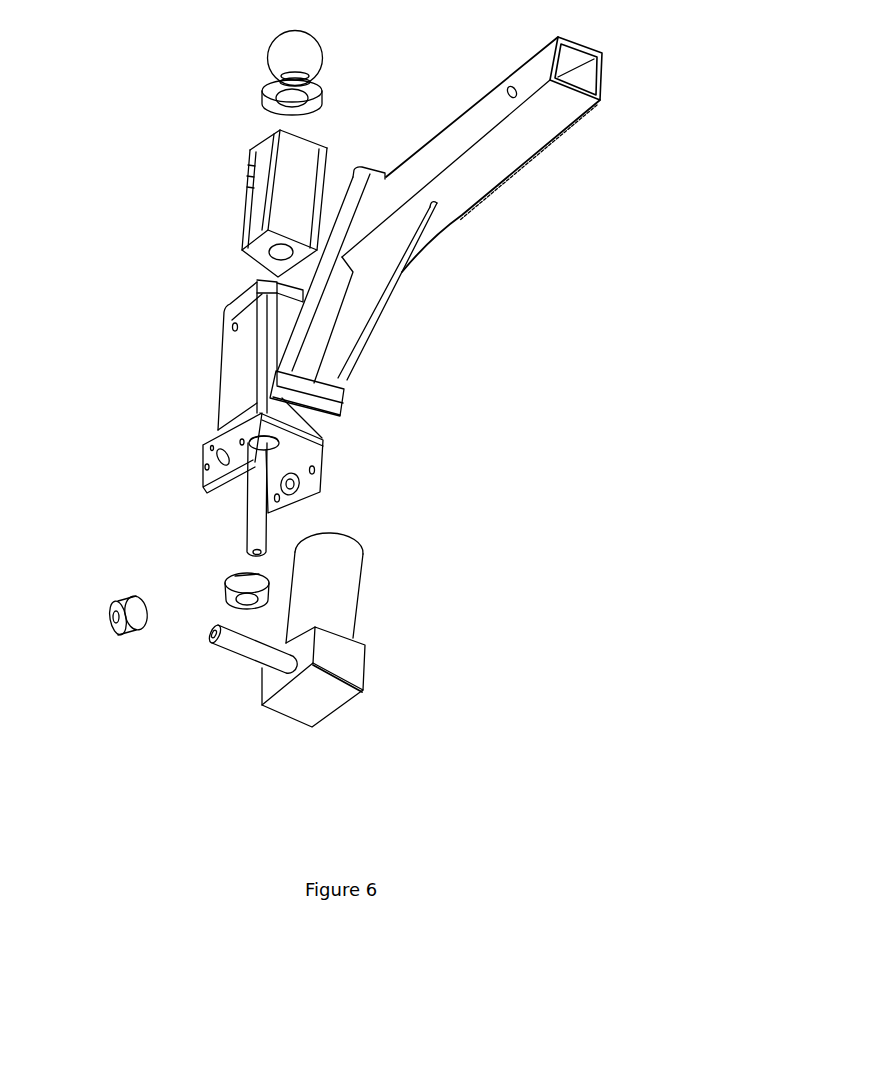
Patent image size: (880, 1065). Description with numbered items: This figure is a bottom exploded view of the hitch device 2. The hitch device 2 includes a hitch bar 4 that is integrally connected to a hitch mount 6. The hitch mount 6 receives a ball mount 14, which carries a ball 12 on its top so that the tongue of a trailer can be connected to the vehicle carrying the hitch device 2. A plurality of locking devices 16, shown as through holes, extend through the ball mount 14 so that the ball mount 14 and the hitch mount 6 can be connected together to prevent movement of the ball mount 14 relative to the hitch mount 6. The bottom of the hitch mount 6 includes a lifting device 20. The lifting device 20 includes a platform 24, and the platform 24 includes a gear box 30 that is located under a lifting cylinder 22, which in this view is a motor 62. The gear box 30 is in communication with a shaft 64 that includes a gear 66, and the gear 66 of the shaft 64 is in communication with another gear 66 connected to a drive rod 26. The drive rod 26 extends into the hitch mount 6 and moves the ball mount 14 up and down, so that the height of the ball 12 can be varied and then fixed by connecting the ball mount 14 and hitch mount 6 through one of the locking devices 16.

The hitch device 2 is at (675, 50).
The hitch bar 4 is at (543, 127).
The hitch mount 6 is at (235, 368).
The ball 12 is at (285, 57).
The ball mount 14 is at (243, 250).
The locking devices 16 is at (251, 187).
The lifting device 20 is at (486, 402).
The lifting cylinder 22 is at (387, 605).
The platform 24 is at (409, 674).
The drive rod 26 is at (248, 542).
The gear box 30 is at (333, 664).
The motor 62 is at (350, 582).
The shaft 64 is at (247, 643).
The gear 66 is at (123, 652).